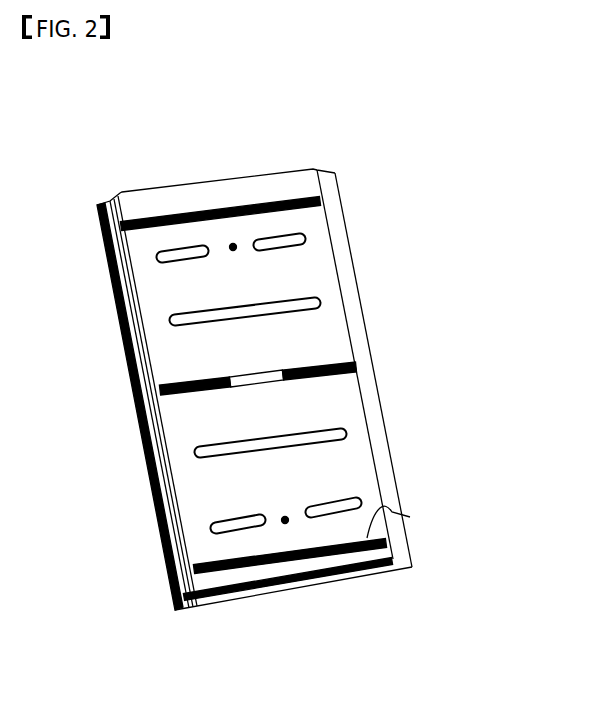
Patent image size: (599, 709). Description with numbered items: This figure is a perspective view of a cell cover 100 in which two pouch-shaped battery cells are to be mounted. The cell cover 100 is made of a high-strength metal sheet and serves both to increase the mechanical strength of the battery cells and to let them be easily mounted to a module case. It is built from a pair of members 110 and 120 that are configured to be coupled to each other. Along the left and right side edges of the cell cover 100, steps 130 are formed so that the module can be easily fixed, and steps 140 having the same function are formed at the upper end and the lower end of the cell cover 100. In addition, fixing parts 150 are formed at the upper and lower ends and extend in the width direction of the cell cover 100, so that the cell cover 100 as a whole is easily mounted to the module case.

The cell cover 100 is at (77, 140).
The member 110 is at (220, 603).
The member 120 is at (288, 594).
The steps 130 is at (148, 480).
The steps 140 is at (246, 188).
The fixing parts 150 is at (410, 517).